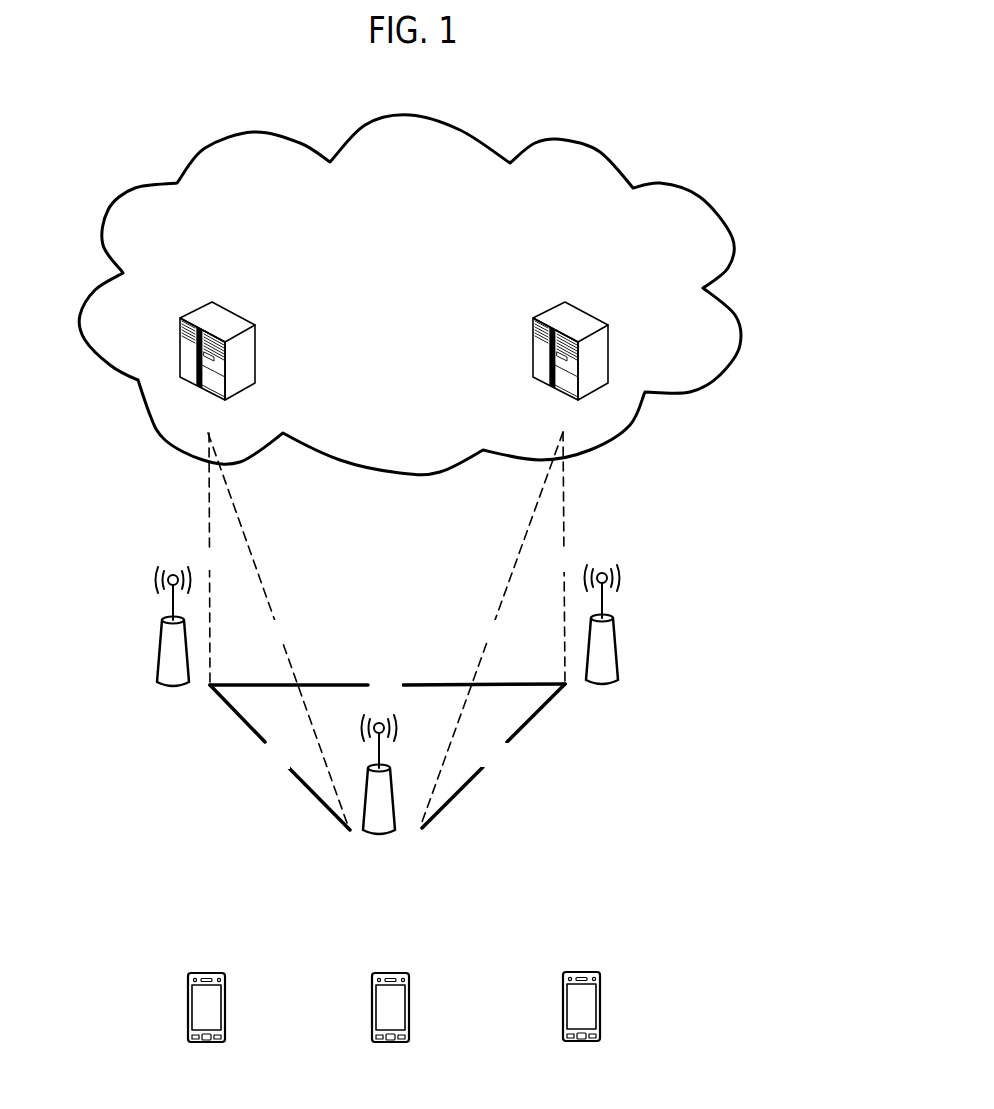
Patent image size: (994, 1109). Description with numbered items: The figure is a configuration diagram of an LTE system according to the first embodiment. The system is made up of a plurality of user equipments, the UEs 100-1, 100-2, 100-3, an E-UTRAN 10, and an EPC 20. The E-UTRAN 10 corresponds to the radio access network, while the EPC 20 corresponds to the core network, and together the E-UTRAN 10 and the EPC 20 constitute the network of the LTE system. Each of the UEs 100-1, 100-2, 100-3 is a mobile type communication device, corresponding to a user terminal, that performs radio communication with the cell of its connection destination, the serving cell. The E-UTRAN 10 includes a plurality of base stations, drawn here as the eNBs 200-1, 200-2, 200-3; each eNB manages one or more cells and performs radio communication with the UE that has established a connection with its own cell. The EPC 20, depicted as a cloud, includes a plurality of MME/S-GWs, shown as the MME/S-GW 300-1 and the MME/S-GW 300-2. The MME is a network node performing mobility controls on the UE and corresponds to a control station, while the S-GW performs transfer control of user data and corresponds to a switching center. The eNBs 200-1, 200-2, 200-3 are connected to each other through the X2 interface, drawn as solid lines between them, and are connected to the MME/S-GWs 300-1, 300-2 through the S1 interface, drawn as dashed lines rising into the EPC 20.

The EPC 20 is at (613, 153).
The MME/S-GW 300-1 is at (242, 313).
The MME/S-GW 300-2 is at (602, 292).
The E-UTRAN 10 is at (435, 654).
The eNB 200-1 is at (160, 652).
The eNB 200-2 is at (395, 812).
The eNB 200-3 is at (615, 633).
The UE 100-1 is at (218, 973).
The UE 100-2 is at (402, 973).
The UE 100-3 is at (588, 972).